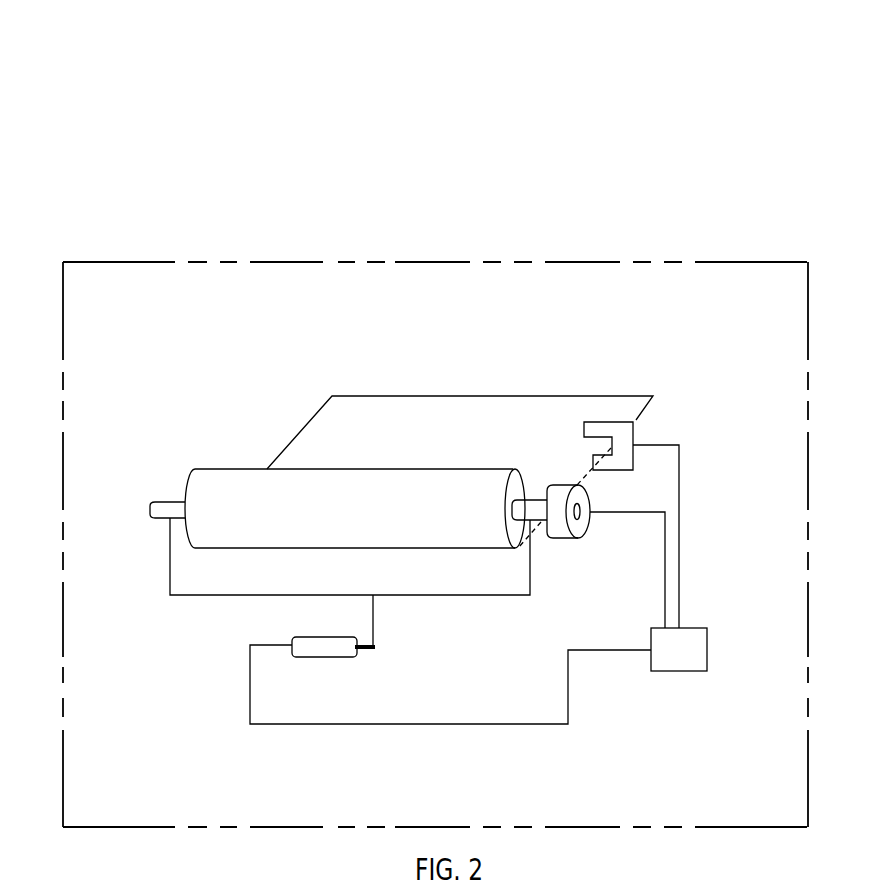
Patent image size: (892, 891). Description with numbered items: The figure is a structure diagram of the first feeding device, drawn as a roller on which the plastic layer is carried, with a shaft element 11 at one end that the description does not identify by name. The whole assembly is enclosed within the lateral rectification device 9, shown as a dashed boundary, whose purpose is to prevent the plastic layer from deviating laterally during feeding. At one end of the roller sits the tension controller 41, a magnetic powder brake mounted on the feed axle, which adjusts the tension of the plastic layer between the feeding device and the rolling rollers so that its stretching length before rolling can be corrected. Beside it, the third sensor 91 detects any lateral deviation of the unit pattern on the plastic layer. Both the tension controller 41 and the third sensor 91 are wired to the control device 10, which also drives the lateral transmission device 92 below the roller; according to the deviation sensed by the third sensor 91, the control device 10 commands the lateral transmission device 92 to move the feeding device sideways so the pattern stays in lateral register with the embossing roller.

The lateral rectification device 9 is at (274, 303).
The control device 10 is at (677, 660).
The roller shaft 11 is at (167, 511).
The tension controller 41 is at (558, 530).
The third sensor 91 is at (623, 442).
The lateral transmission device 92 is at (320, 647).